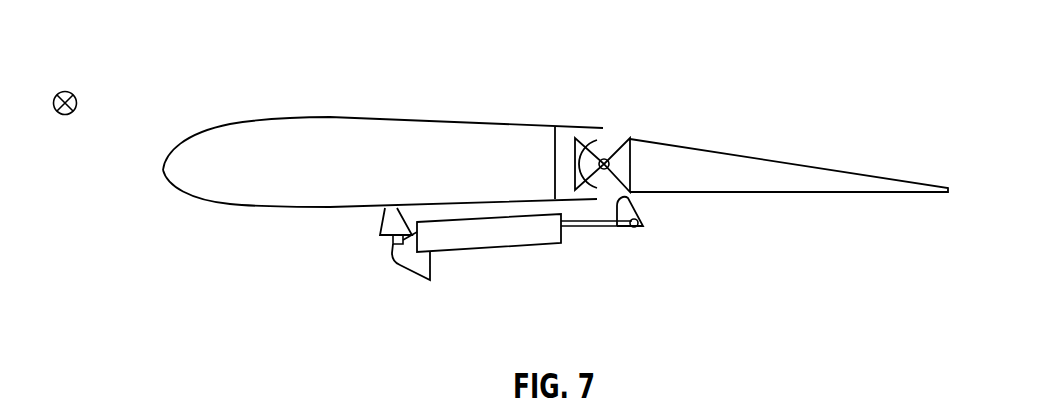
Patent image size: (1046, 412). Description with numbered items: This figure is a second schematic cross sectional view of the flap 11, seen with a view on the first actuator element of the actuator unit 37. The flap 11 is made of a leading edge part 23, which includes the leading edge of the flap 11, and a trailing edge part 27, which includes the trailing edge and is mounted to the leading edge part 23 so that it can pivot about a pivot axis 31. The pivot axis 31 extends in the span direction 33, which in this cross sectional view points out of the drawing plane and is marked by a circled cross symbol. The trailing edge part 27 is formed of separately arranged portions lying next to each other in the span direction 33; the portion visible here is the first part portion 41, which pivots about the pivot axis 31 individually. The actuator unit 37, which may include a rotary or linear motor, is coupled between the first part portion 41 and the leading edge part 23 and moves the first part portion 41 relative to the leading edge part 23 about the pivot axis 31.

The flap 11 is at (221, 101).
The leading edge part 23 is at (320, 171).
The trailing edge part 27 is at (789, 134).
The pivot axis 31 is at (606, 158).
The span direction 33 is at (66, 90).
The actuator unit 37 is at (503, 235).
The first part portion 41 is at (761, 177).